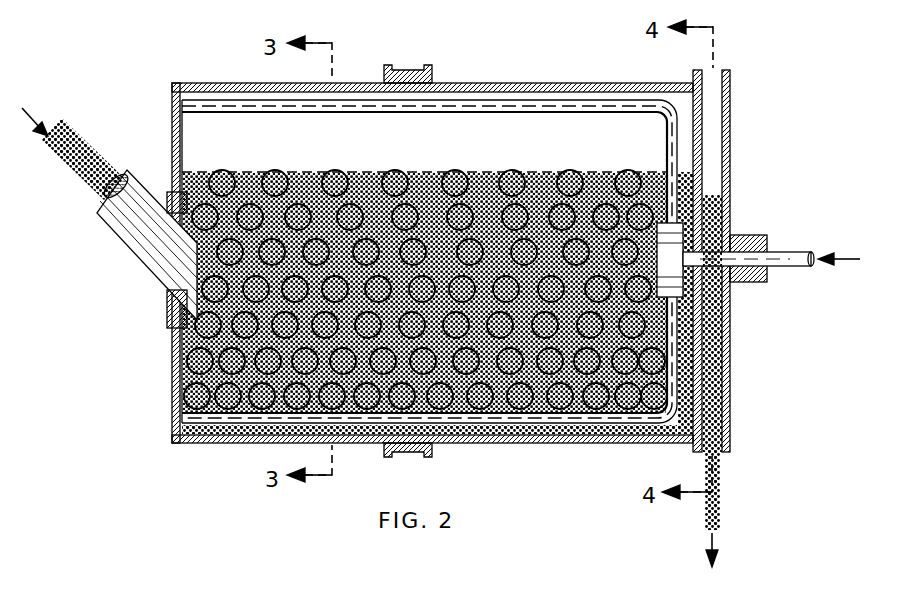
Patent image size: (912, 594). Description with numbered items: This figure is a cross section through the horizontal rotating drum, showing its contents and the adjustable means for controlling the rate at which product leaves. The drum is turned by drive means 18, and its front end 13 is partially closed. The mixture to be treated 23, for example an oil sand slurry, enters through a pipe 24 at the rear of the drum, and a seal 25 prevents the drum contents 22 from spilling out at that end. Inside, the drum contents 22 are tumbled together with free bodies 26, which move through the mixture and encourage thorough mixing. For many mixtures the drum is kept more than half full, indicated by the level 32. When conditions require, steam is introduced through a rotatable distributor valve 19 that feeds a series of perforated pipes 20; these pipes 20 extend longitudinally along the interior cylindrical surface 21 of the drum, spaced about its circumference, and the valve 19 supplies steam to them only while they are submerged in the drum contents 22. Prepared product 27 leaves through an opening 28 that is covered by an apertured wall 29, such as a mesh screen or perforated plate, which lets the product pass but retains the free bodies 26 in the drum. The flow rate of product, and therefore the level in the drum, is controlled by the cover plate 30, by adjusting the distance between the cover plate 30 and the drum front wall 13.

The front end 13 is at (705, 93).
The drive means 18 is at (410, 68).
The rotatable distributor valve 19 is at (656, 300).
The perforated pipes 20 is at (505, 102).
The interior cylindrical surface 21 is at (224, 100).
The drum contents 22 is at (450, 400).
The mixture to be treated 23 is at (82, 138).
The pipe 24 is at (137, 247).
The seal 25 is at (166, 306).
The free bodies 26 is at (512, 178).
The product 27 is at (722, 487).
The opening 28 is at (702, 206).
The apertured wall 29 is at (712, 284).
The cover plate 30 is at (732, 122).
The level 32 is at (358, 172).